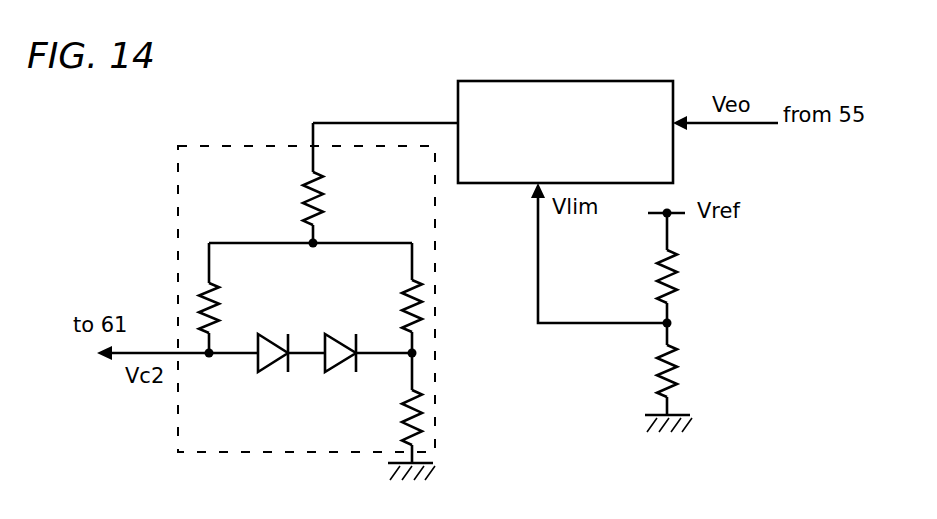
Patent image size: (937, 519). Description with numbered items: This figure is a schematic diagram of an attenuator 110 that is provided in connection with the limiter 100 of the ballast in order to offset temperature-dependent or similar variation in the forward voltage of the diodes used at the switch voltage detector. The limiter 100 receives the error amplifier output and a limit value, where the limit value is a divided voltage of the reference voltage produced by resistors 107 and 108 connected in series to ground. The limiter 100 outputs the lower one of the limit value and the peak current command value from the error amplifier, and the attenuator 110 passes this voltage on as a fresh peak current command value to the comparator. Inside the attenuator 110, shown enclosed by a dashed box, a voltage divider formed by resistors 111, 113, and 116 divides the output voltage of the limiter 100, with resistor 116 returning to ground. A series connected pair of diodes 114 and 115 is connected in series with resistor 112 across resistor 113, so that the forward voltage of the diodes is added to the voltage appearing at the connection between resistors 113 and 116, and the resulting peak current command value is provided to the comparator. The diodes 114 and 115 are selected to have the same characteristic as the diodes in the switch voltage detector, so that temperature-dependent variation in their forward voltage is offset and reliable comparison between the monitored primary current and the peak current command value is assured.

The limiter 100 is at (565, 132).
The resistor 107 is at (683, 280).
The resistor 108 is at (688, 362).
The attenuator 110 is at (178, 146).
The resistor 111 is at (333, 204).
The resistor 112 is at (225, 313).
The resistor 113 is at (425, 318).
The diode 114 is at (330, 380).
The diode 115 is at (270, 383).
The resistor 116 is at (425, 423).